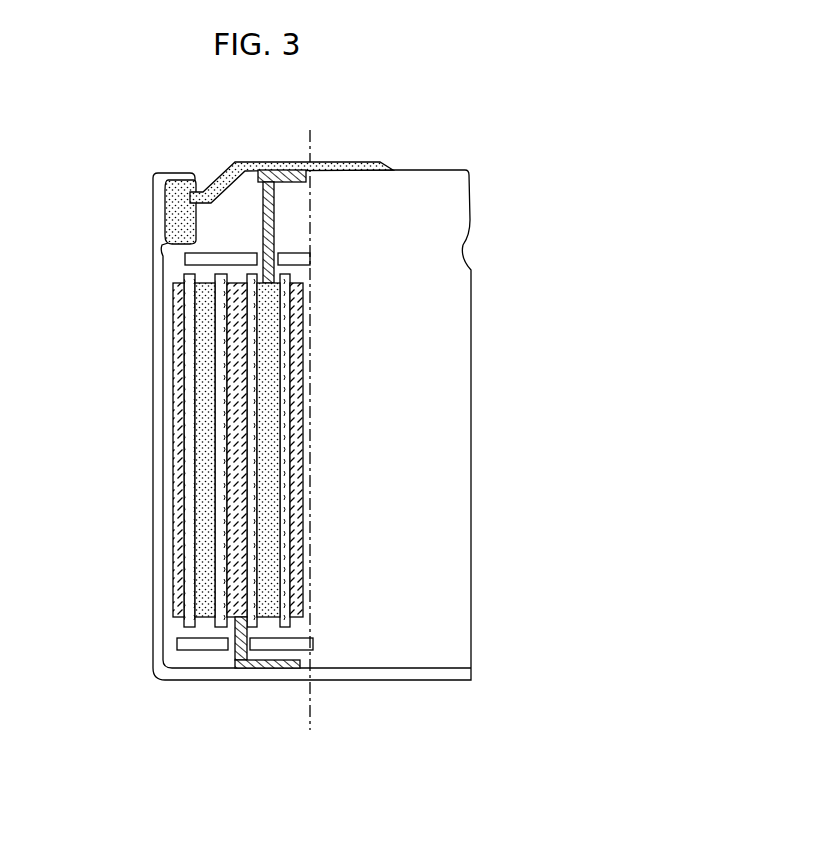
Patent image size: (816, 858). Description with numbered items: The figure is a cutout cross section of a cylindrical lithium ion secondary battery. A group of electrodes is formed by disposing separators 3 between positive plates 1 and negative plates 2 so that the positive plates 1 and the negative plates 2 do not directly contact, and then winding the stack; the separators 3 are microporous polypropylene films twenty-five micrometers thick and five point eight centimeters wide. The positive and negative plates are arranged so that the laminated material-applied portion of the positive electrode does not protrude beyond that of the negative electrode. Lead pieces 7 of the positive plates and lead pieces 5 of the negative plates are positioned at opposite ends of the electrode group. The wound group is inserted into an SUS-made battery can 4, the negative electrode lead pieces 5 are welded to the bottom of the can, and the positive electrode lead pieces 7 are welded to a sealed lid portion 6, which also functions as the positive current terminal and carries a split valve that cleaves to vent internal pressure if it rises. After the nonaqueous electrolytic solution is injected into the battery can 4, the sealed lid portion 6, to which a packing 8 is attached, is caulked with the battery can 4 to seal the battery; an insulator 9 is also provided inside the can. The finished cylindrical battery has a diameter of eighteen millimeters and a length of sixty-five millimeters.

The positive plate 1 is at (268, 623).
The negative plate 2 is at (190, 540).
The separator 3 is at (177, 622).
The battery can 4 is at (152, 472).
The lead piece of the negative plate 5 is at (233, 662).
The sealed lid portion 6 is at (363, 158).
The lead piece of the positive plate 7 is at (265, 211).
The packing 8 is at (197, 182).
The insulator 9 is at (190, 263).